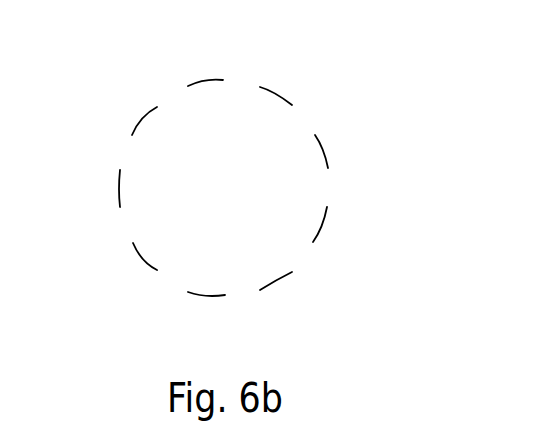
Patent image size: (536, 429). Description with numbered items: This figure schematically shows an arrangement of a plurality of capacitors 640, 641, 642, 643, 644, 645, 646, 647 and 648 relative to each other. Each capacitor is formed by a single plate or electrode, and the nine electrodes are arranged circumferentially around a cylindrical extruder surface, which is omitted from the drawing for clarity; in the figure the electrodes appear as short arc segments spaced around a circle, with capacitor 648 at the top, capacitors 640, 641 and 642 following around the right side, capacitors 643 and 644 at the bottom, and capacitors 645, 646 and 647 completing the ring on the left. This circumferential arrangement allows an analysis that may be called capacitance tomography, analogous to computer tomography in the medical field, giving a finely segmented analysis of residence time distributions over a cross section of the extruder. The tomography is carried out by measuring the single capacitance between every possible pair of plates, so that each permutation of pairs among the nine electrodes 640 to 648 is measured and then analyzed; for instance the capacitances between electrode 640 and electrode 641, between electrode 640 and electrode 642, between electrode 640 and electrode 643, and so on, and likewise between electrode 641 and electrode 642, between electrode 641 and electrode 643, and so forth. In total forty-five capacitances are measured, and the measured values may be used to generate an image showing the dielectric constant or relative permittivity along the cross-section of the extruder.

The capacitor 640 is at (280, 92).
The capacitor 641 is at (325, 150).
The capacitor 642 is at (322, 225).
The capacitor 643 is at (278, 284).
The capacitor 644 is at (207, 297).
The capacitor 645 is at (143, 260).
The capacitor 646 is at (117, 190).
The capacitor 647 is at (140, 118).
The capacitor 648 is at (207, 81).